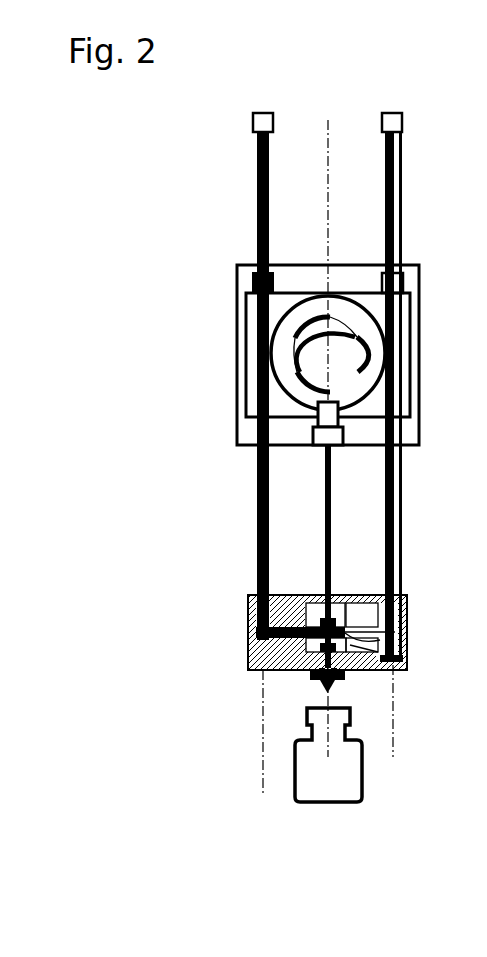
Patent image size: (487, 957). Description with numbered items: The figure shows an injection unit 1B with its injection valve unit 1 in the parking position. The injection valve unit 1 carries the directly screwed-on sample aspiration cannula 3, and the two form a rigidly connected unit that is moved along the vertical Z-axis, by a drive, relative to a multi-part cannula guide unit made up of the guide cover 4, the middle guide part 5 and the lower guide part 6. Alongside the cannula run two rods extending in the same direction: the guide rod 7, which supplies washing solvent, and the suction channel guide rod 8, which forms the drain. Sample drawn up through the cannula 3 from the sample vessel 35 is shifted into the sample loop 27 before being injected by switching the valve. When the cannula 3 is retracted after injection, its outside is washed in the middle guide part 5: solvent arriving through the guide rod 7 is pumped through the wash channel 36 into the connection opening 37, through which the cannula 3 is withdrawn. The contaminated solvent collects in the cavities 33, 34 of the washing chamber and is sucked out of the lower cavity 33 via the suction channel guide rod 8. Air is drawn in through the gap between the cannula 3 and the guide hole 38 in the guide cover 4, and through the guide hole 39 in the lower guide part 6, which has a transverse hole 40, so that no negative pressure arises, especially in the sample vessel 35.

The injection valve unit 1 is at (243, 281).
The injection unit 1B is at (226, 391).
The sample loop 27 is at (293, 350).
The guide rod 7 is at (256, 480).
The suction channel guide rod 8 is at (385, 497).
The sample aspiration cannula 3 is at (323, 532).
The guide hole 38 is at (326, 601).
The guide cover 4 is at (297, 596).
The middle guide part 5 is at (249, 620).
The wash channel 36 is at (250, 640).
The connection opening 37 is at (250, 660).
The lower guide part 6 is at (295, 675).
The transverse hole 40 is at (323, 680).
The guide hole 39 is at (343, 680).
The lower cavity 33 is at (378, 668).
The cavity 34 is at (363, 652).
The sample vessel 35 is at (318, 758).